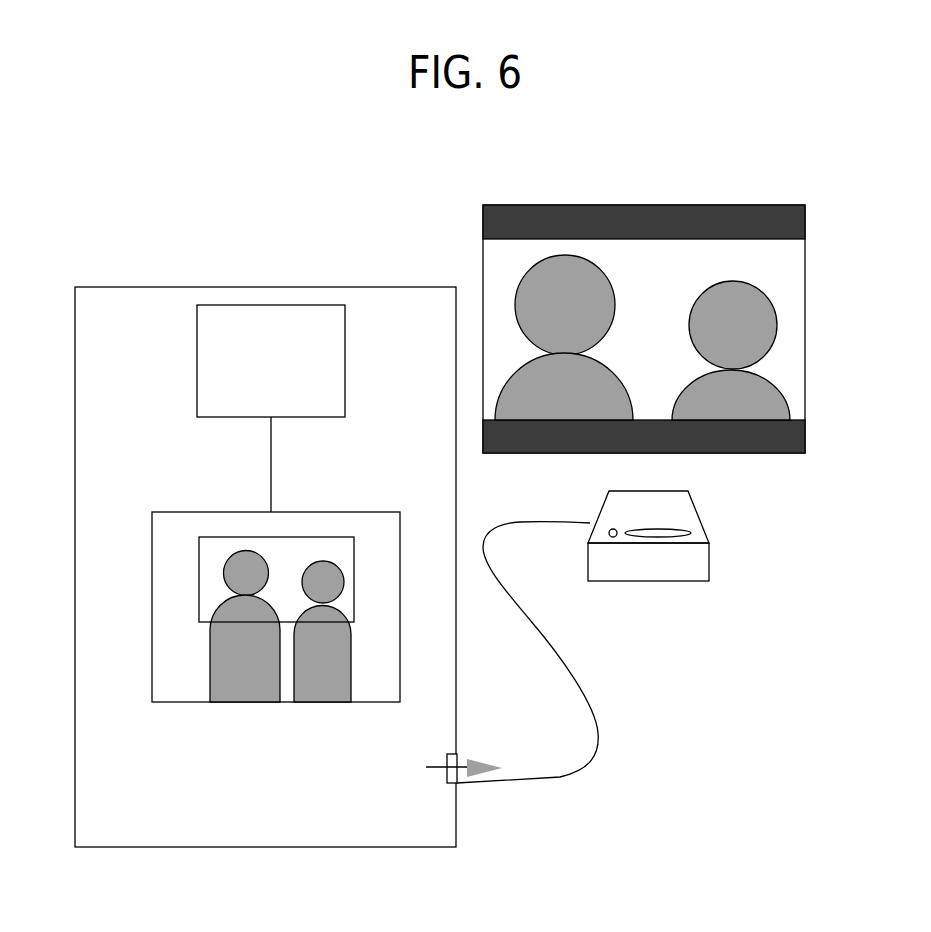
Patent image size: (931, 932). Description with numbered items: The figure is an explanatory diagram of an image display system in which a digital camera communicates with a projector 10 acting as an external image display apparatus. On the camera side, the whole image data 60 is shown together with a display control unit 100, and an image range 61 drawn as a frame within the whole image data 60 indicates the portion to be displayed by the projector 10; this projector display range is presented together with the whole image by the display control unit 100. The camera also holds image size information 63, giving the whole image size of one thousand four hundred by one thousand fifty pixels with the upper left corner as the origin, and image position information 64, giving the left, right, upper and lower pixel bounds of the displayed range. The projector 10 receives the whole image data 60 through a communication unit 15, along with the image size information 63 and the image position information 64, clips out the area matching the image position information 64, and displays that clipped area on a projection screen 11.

The display control unit 100 is at (270, 305).
The whole image data 60 is at (152, 522).
The image range 61 is at (250, 537).
The image size information 63 is at (145, 770).
The image position information 64 is at (145, 808).
The communication unit 15 is at (457, 783).
The projector 10 is at (709, 522).
The projection screen 11 is at (805, 322).